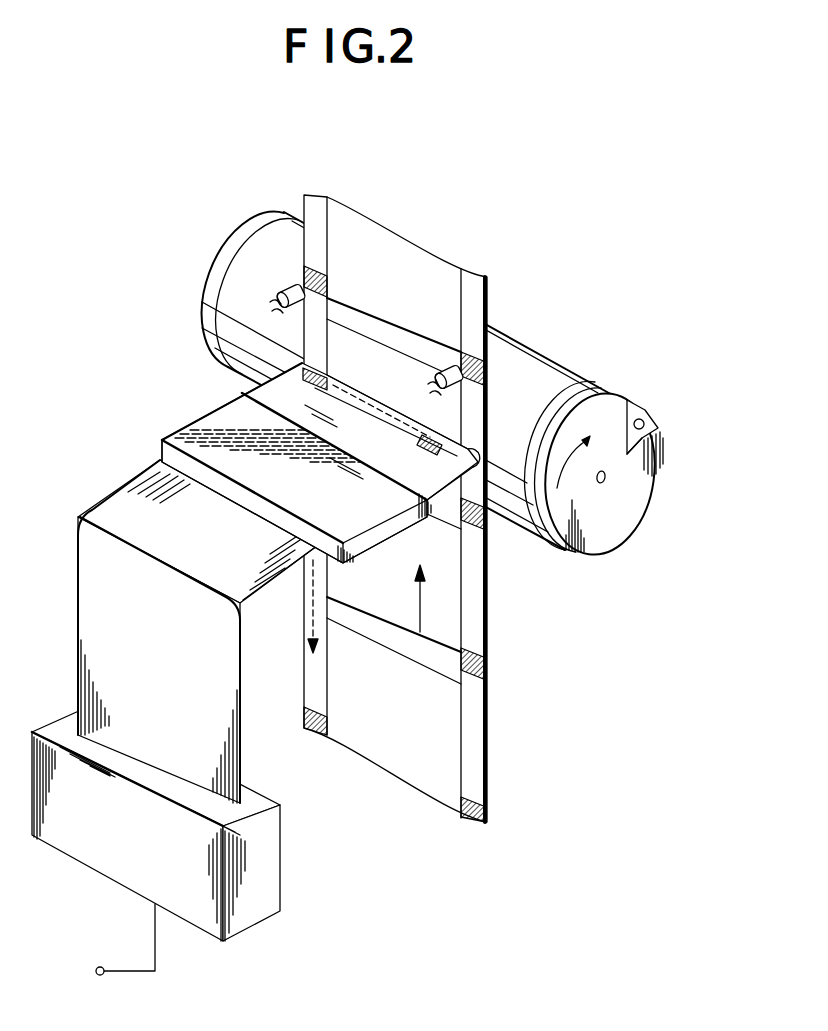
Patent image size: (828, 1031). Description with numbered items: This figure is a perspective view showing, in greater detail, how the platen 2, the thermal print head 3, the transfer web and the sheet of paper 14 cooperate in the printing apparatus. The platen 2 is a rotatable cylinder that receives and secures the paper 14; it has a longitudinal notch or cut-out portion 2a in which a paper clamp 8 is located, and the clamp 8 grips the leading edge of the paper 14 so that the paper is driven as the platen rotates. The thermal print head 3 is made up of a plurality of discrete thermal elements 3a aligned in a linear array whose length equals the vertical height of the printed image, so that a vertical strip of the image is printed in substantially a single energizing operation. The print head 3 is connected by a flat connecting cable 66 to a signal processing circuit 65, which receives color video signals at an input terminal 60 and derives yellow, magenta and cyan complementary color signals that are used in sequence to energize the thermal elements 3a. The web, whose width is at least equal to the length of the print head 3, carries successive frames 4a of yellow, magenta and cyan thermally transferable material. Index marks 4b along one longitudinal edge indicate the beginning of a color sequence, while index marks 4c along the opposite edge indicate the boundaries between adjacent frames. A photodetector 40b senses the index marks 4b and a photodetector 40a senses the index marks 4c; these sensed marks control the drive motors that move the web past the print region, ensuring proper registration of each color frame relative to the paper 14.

The platen 2 is at (609, 535).
The notch or cut-out portion 2a is at (664, 404).
The thermal print head 3 is at (242, 393).
The thermal elements 3a is at (424, 440).
The frame plate panels 4a is at (436, 276).
The index marks 4b is at (330, 282).
The index marks 4c is at (487, 369).
The paper clamp 8 is at (636, 406).
The sheet of paper 14 is at (560, 373).
The photodetector 40a is at (446, 367).
The photodetector 40b is at (290, 285).
The input terminal 60 is at (100, 967).
The signal processing circuit 65 is at (268, 876).
The flat connecting cable 66 is at (97, 587).